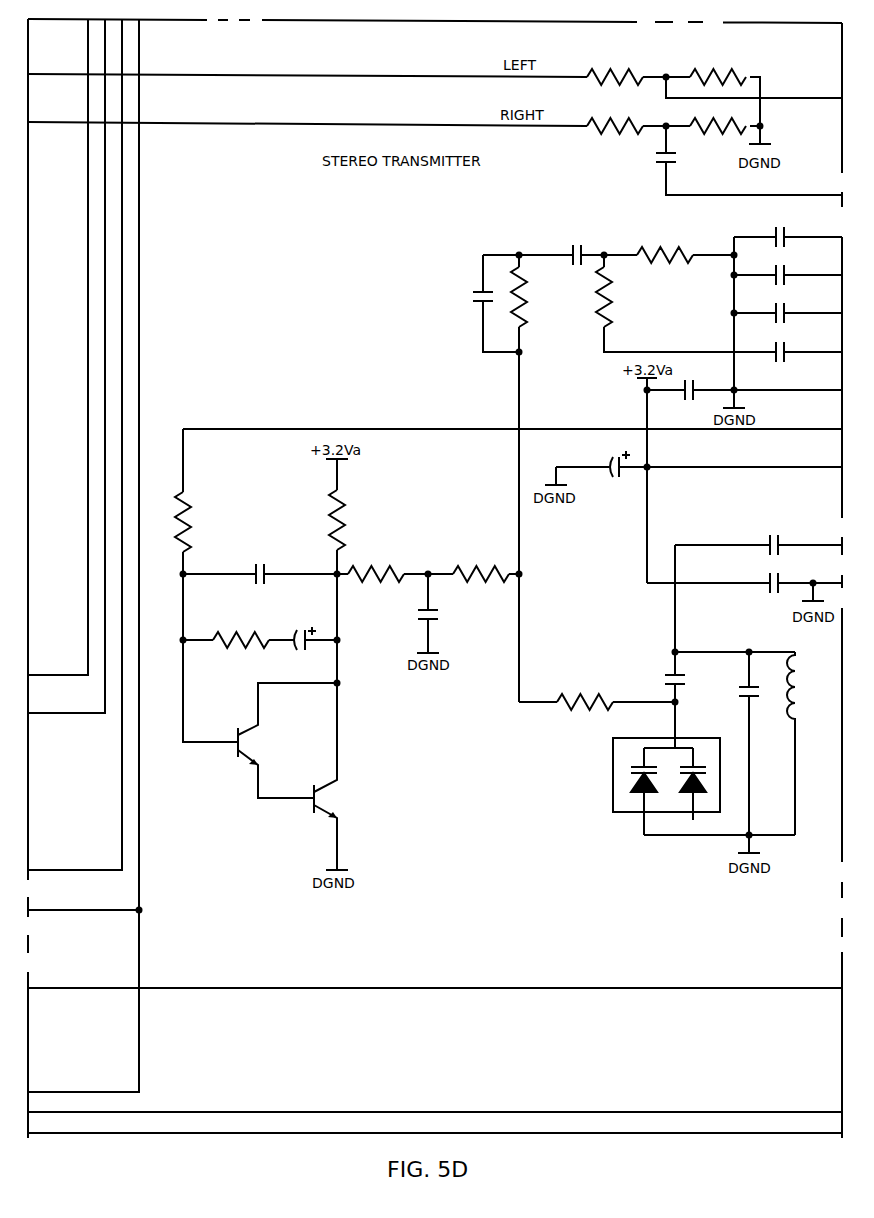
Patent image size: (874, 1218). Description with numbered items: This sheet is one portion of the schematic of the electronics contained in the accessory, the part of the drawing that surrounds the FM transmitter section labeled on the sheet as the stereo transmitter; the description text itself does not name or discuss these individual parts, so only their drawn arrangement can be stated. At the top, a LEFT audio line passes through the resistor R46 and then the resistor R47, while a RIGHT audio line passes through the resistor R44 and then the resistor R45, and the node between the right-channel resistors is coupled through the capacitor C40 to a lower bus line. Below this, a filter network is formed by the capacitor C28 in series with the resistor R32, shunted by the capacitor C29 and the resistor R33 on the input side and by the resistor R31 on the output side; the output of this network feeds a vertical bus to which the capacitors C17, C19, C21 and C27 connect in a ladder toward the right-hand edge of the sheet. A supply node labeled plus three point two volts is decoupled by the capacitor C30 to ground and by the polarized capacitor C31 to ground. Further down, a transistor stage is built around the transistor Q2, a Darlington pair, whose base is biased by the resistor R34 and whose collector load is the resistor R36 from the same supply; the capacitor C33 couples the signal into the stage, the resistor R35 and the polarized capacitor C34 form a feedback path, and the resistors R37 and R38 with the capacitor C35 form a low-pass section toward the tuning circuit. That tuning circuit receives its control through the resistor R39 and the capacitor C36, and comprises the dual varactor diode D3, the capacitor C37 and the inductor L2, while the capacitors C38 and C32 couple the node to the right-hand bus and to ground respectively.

The resistor 33K R46 is at (610, 78).
The resistor 10K R47 is at (716, 68).
The resistor 33K R44 is at (605, 127).
The resistor 10K R45 is at (714, 136).
The capacitor 1uF C40 is at (734, 160).
The capacitor 10uF C28 is at (557, 254).
The resistor 6K8 R32 is at (665, 259).
The capacitor 330pF C29 is at (475, 303).
The resistor 10K R33 is at (534, 478).
The resistor 4K7 R31 is at (665, 303).
The capacitor 2200pF C17 is at (788, 233).
The capacitor 150pF C19 is at (788, 272).
The capacitor 10uF C21 is at (788, 310).
The capacitor 1uF C27 is at (788, 348).
The capacitor .01uF C30 is at (689, 392).
The capacitor 100uF 4V C31 is at (687, 455).
The capacitor 100pF C38 is at (758, 546).
The capacitor 1000pF C32 is at (744, 585).
The resistor 20K R34 is at (206, 585).
The resistor 1K0 R36 is at (346, 641).
The capacitor .047pF C33 is at (265, 576).
The resistor 10K R37 is at (376, 577).
The resistor 3K3 R38 is at (481, 577).
The capacitor 2200pF C35 is at (454, 609).
The resistor 100R R35 is at (239, 642).
The capacitor 33uF 6.3V C34 is at (297, 642).
The transistor 2SD2142K Q2 is at (329, 776).
The resistor 10K R39 is at (597, 702).
The capacitor 150pF C36 is at (651, 700).
The varactor diode BB200 D3 is at (671, 777).
The capacitor 5pF C37 is at (733, 743).
The inductor 47nH L2 is at (811, 743).